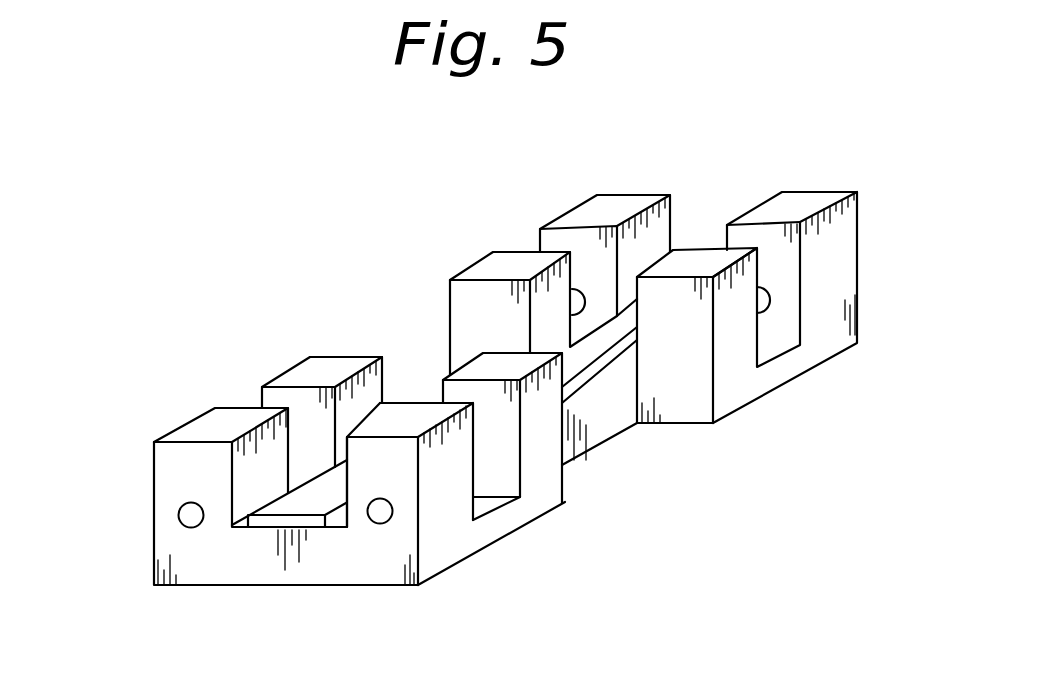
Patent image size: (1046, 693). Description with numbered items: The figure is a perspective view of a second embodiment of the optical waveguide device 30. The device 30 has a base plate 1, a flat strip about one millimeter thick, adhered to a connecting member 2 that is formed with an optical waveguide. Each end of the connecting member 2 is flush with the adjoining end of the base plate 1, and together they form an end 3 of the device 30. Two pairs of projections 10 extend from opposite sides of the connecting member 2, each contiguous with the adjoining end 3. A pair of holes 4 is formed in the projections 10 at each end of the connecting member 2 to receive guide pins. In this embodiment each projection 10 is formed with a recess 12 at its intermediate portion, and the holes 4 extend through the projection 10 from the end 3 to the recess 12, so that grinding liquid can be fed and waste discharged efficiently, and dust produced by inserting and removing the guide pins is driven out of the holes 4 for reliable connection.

The base plate 1 is at (288, 498).
The connecting member 2 is at (542, 477).
The end 3 is at (387, 566).
The holes 4 is at (376, 524).
The projections 10 is at (422, 407).
The recess 12 is at (312, 443).
The optical waveguide device 30 is at (802, 376).